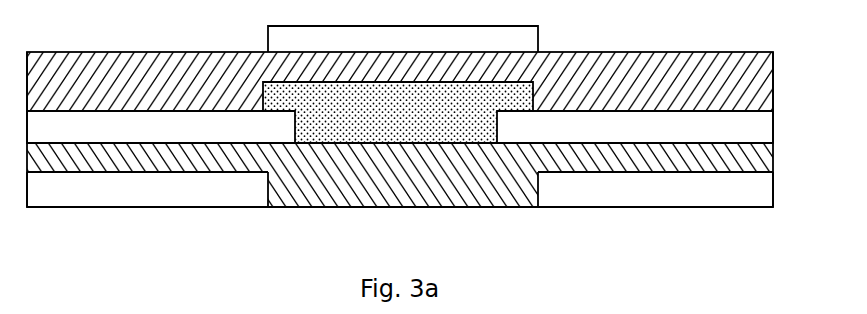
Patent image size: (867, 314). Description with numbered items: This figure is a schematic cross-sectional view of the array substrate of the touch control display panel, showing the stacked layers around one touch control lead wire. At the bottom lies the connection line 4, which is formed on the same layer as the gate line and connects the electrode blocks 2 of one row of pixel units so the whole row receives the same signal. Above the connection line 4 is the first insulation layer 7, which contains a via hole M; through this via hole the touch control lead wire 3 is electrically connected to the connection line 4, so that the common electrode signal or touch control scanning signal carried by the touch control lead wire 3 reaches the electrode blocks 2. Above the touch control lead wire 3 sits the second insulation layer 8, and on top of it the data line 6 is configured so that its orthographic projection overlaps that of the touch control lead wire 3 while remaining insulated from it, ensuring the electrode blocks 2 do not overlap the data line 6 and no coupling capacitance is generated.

The electrode block 2 is at (633, 196).
The touch control lead wire 3 is at (500, 117).
The connection line 4 is at (397, 172).
The data line 6 is at (497, 38).
The first insulation layer 7 is at (735, 126).
The second insulation layer 8 is at (735, 83).